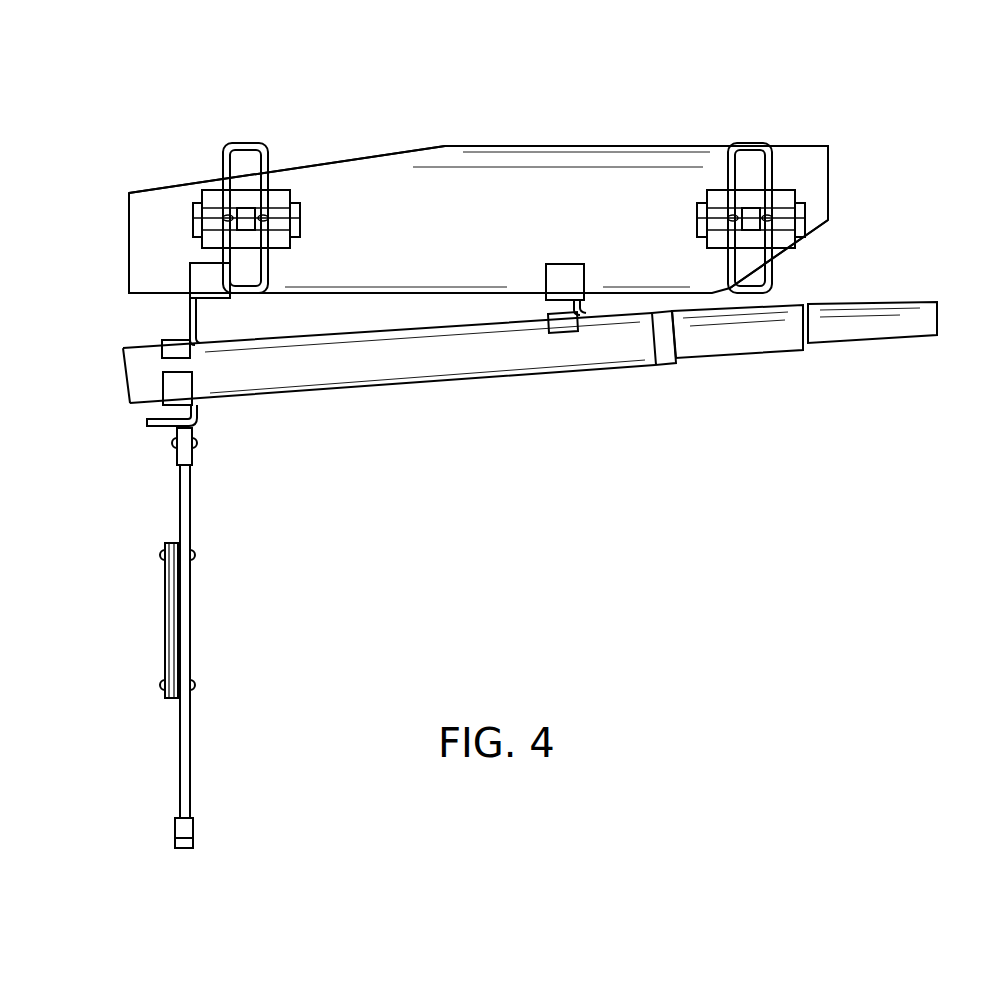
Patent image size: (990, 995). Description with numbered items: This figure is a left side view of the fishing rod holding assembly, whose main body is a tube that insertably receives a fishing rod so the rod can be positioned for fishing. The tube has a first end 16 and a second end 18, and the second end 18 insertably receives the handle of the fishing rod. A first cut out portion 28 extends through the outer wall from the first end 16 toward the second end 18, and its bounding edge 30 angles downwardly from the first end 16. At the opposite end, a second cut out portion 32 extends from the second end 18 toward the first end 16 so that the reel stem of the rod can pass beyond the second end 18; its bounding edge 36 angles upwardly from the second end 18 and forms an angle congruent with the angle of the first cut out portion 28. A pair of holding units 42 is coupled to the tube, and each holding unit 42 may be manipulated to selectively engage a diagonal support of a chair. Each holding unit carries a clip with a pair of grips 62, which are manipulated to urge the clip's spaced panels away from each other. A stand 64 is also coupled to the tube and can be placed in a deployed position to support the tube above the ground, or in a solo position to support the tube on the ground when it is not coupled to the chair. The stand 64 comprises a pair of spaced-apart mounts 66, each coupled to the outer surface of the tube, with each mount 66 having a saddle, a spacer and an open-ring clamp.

The first end 16 is at (828, 165).
The second end 18 is at (129, 235).
The first cut out portion 28 is at (812, 254).
The bounding edge 30 is at (780, 260).
The second cut out portion 32 is at (358, 150).
The bounding edge 36 is at (170, 190).
The holding unit 42 is at (330, 212).
The grip 62 is at (772, 243).
The stand 64 is at (252, 512).
The mount 66 is at (145, 320).